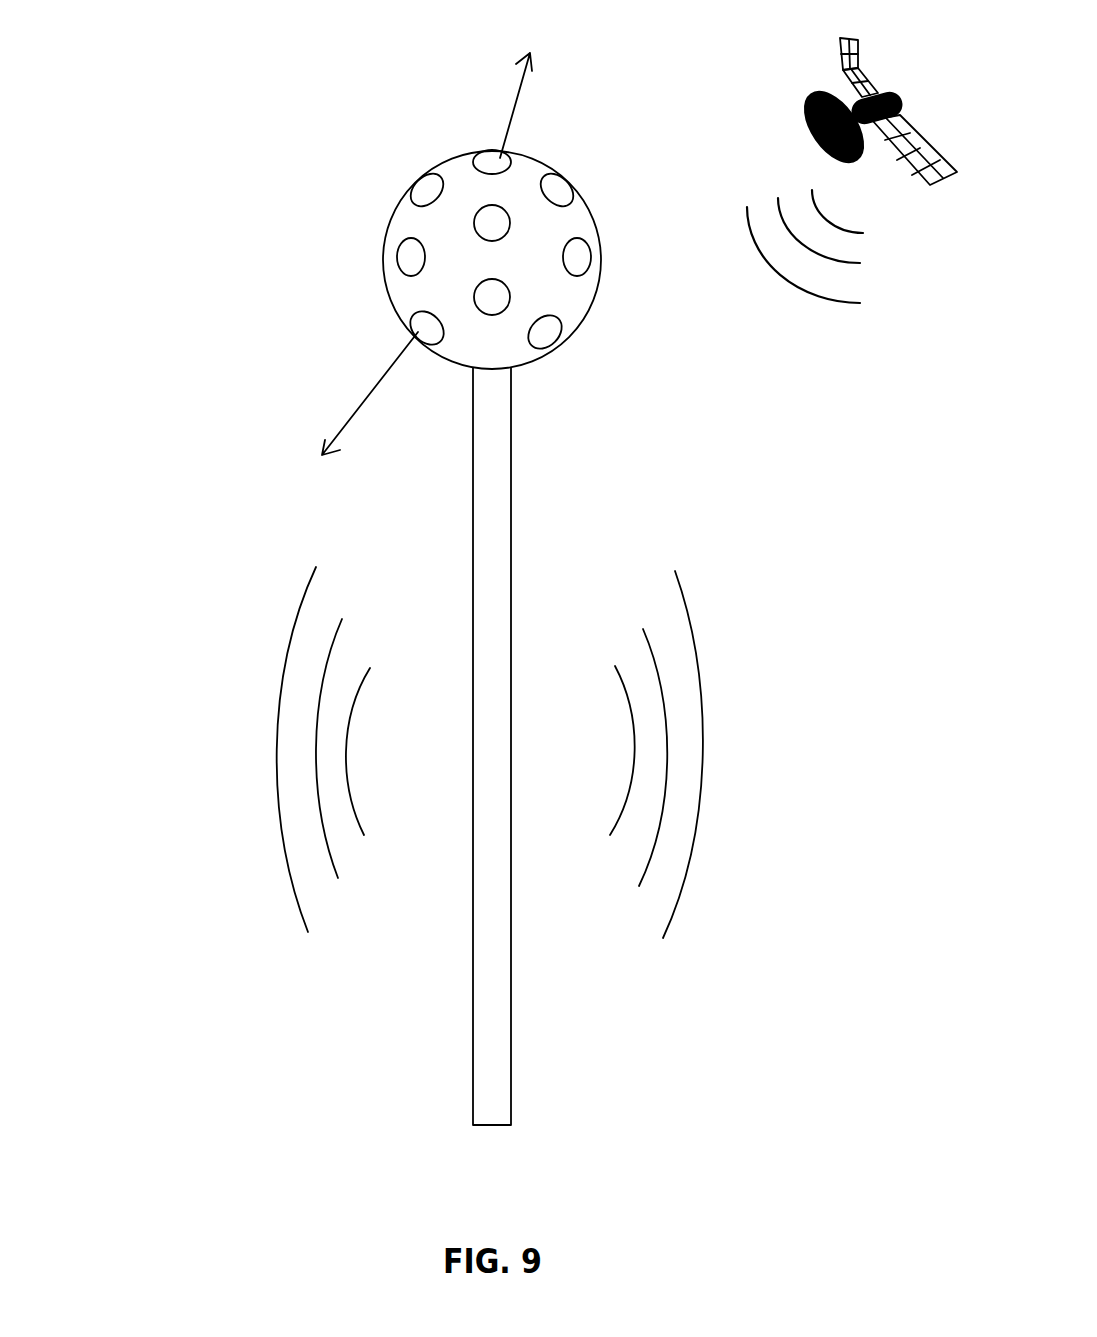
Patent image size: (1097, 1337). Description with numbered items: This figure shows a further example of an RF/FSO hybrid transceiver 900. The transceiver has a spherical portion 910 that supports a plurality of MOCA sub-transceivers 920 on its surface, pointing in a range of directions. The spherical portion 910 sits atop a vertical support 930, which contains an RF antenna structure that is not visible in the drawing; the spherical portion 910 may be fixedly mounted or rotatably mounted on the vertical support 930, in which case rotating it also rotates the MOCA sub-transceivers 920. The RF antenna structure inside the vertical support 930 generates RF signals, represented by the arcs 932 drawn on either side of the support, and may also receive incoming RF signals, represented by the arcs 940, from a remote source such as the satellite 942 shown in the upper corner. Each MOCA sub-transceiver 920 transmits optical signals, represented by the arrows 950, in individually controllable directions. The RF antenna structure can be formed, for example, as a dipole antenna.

The RF/FSO hybrid transceiver 900 is at (162, 256).
The spherical portion 910 is at (390, 297).
The MOCA sub-transceivers 920 is at (397, 257).
The vertical support 930 is at (511, 457).
The arcs 932 is at (251, 528).
The arcs 940 is at (876, 218).
The satellite 942 is at (776, 78).
The arrows 950 is at (515, 103).